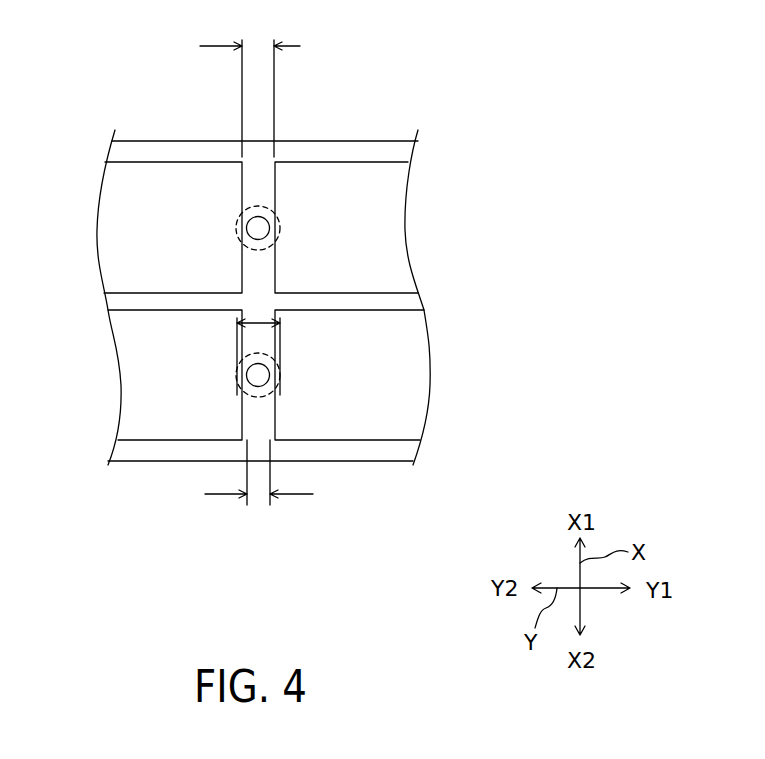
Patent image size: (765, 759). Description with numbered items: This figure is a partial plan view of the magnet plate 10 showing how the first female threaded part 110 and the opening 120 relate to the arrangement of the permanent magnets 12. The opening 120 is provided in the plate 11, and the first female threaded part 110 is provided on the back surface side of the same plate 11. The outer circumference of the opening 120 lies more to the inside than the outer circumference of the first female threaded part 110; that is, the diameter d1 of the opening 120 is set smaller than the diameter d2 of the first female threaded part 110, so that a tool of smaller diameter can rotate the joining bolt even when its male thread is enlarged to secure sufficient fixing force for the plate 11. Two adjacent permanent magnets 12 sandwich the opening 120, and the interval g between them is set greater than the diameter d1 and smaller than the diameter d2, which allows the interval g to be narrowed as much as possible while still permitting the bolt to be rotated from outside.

The magnet plate 10 is at (268, 265).
The plate 11 is at (378, 150).
The permanent magnets 12 is at (112, 228).
The first female threaded part 110 is at (271, 381).
The opening 120 is at (247, 378).
The interval g is at (250, 87).
The diameter of the opening d1 is at (259, 485).
The diameter of the first female threaded part d2 is at (260, 322).